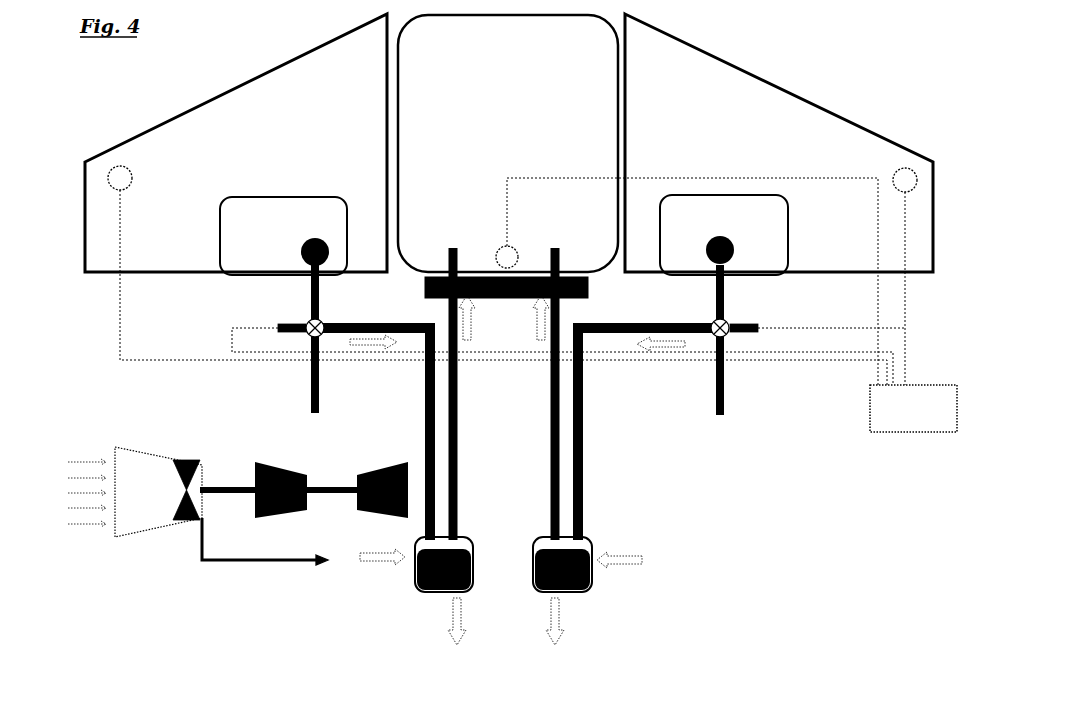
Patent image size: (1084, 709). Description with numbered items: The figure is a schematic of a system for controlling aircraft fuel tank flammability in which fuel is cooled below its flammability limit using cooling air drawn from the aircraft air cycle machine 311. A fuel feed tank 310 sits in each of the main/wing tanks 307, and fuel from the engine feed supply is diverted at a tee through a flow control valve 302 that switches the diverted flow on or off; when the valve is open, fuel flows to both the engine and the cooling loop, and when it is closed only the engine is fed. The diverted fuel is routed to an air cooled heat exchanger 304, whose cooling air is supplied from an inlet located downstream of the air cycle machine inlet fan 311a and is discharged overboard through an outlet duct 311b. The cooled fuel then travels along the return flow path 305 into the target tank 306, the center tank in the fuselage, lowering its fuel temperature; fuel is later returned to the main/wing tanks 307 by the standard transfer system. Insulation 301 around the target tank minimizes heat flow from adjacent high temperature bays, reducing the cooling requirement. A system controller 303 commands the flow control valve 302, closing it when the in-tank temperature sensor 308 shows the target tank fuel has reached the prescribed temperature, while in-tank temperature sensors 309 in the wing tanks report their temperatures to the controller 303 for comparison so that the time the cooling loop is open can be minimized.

The insulation 301 is at (525, 287).
The flow control valve 302 is at (517, 313).
The system controller 303 is at (538, 316).
The air cooled heat exchanger 304 is at (505, 581).
The return flow path 305 is at (517, 394).
The target tank 306 is at (508, 143).
The main/wing tanks 307 is at (509, 143).
The in-tank temperature sensor 308 is at (520, 249).
The in-tank temperature sensors 309 is at (512, 174).
The fuel feed tank 310 is at (504, 235).
The air cycle machine 311 is at (241, 462).
The air cycle machine inlet fan 311a is at (186, 462).
The outlet duct 311b is at (452, 626).